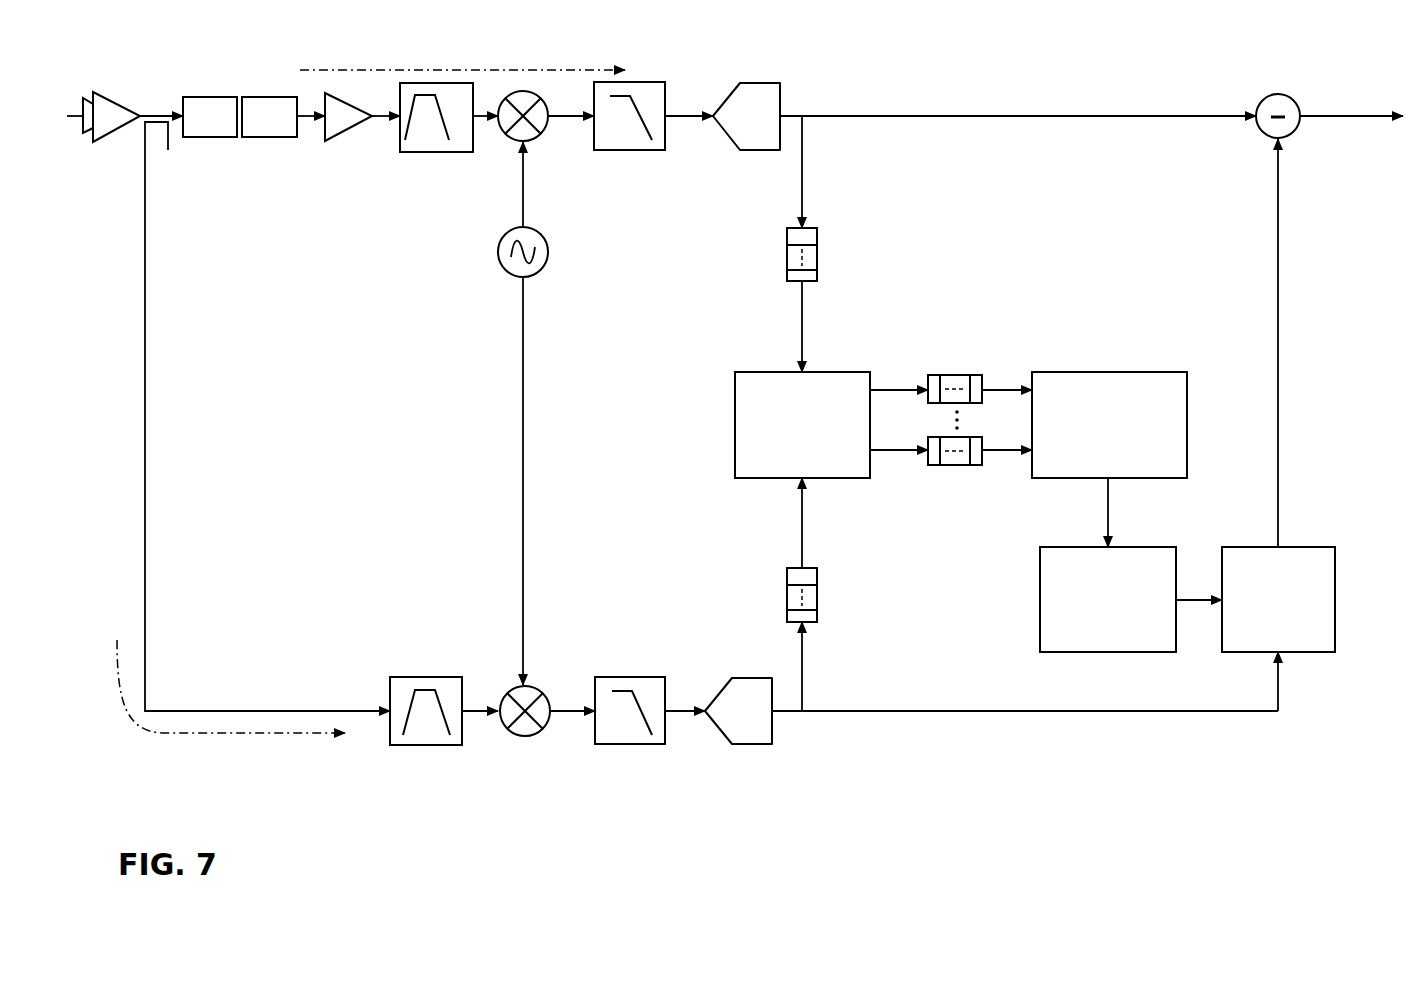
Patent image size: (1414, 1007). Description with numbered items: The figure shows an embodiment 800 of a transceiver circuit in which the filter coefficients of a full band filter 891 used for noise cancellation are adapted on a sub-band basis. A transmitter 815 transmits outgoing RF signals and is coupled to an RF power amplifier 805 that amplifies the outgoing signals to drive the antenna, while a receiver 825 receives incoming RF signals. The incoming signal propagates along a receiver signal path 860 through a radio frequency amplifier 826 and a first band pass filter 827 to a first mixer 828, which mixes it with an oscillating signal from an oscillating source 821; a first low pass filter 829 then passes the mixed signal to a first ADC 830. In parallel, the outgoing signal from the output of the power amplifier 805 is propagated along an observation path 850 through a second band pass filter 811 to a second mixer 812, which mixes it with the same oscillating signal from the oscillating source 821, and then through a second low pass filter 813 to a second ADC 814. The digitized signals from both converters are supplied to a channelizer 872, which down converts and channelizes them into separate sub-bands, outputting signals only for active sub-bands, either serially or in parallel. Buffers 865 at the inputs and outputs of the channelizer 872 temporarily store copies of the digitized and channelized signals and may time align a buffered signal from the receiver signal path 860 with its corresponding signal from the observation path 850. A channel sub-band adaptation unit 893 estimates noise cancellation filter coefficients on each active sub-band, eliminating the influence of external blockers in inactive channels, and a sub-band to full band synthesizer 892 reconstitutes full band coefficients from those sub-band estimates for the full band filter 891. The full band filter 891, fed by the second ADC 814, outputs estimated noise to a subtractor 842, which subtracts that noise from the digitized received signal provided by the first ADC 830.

The embodiment 800 is at (157, 42).
The RF power amplifier 805 is at (95, 137).
The transmitter 815 is at (210, 137).
The receiver 825 is at (265, 97).
The radio frequency amplifier 826 is at (350, 128).
The first band pass filter 827 is at (426, 138).
The first mixer 828 is at (530, 134).
The oscillating source 821 is at (540, 265).
The first low pass filter 829 is at (640, 93).
The first ADC 830 is at (752, 93).
The subtractor 842 is at (1277, 105).
The buffers 865 is at (790, 252).
The channelizer 872 is at (783, 453).
The channel sub-band adaptation unit 893 is at (1090, 466).
The sub-band to full band synthesizer 892 is at (1089, 640).
The full band filter 891 is at (1259, 640).
The second band pass filter 811 is at (417, 735).
The second mixer 812 is at (530, 728).
The second low pass filter 813 is at (628, 731).
The second ADC 814 is at (750, 735).
The receiver signal path 860 is at (462, 57).
The observation path 850 is at (231, 715).